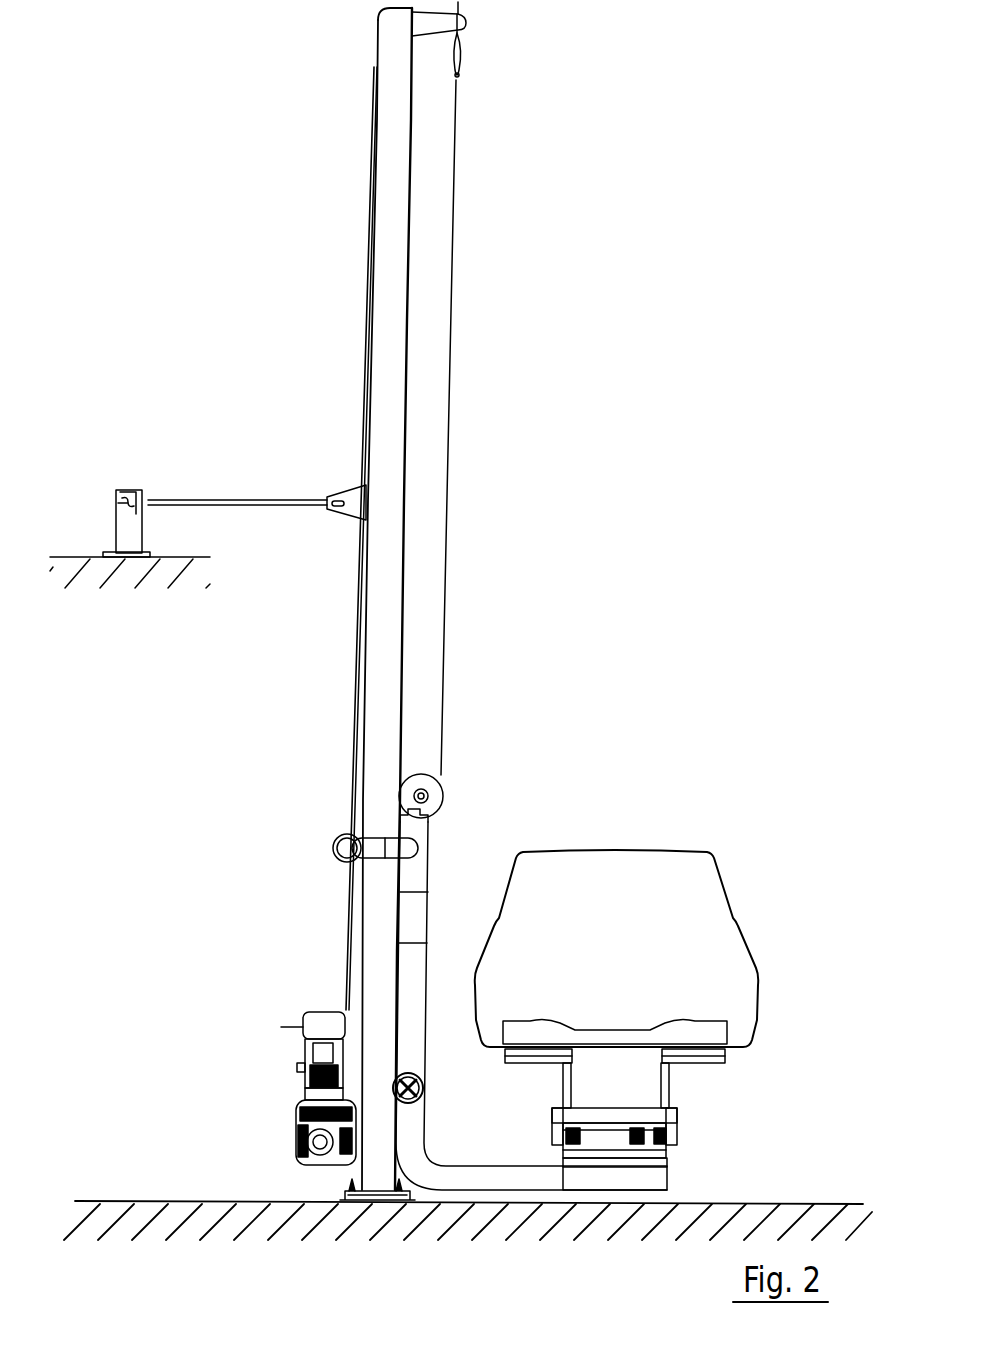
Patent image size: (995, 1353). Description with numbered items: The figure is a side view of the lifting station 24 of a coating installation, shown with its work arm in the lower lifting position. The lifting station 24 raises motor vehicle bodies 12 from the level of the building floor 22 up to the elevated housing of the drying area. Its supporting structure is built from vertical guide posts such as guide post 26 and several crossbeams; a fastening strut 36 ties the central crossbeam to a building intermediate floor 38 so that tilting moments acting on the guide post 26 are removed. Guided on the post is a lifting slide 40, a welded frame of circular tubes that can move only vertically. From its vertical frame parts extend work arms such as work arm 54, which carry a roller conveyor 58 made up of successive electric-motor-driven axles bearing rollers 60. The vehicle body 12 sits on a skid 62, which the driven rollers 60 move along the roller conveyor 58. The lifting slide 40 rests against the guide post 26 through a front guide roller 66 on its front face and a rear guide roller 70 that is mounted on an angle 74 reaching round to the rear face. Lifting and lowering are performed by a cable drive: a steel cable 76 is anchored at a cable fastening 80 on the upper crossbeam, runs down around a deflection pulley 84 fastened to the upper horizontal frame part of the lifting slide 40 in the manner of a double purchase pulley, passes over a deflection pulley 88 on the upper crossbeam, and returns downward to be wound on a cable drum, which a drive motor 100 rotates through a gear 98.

The motor vehicle body 12 is at (703, 915).
The floor 22 is at (98, 1200).
The lifting station 24 is at (745, 266).
The guide post 26 is at (392, 46).
The fastening strut 36 is at (215, 499).
The building intermediate floor 38 is at (73, 557).
The lifting slide 40 is at (455, 876).
The work arm 54 is at (470, 1172).
The roller conveyor 58 is at (667, 1155).
The rollers 60 is at (678, 1124).
The skid 62 is at (667, 1083).
The front guide roller 66 is at (423, 1080).
The rear guide roller 70 is at (345, 838).
The angle 74 is at (383, 850).
The steel cable 76 is at (452, 296).
The cable fastening 80 is at (460, 48).
The deflection pulley 84 is at (442, 797).
The deflection pulley 88 is at (373, 76).
The gear 98 is at (305, 1158).
The drive motor 100 is at (303, 1080).